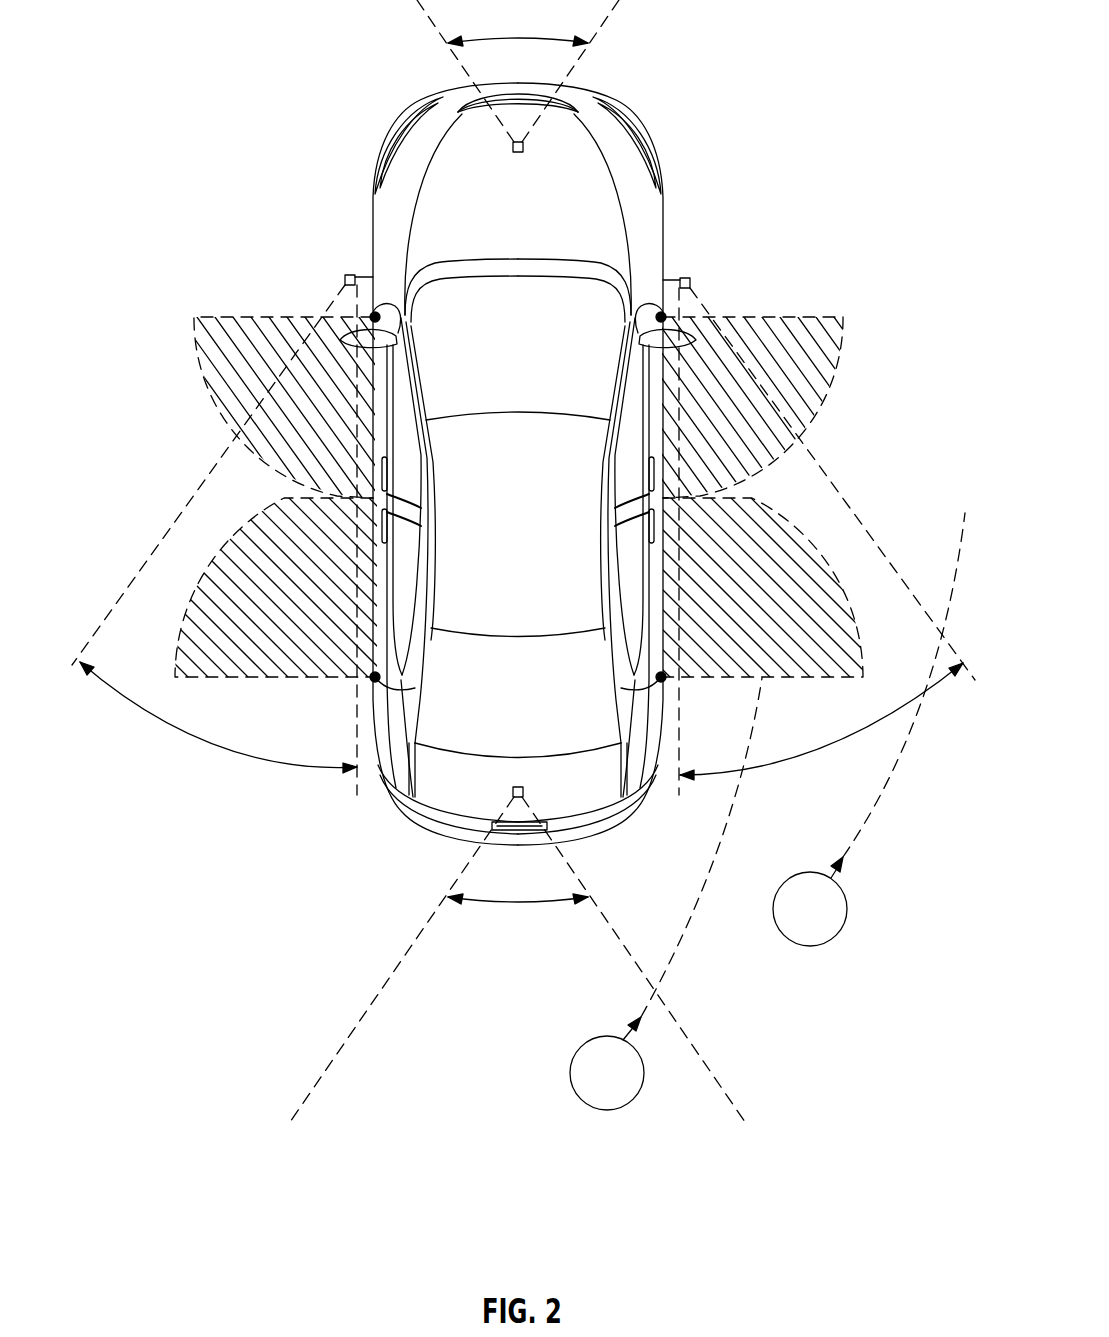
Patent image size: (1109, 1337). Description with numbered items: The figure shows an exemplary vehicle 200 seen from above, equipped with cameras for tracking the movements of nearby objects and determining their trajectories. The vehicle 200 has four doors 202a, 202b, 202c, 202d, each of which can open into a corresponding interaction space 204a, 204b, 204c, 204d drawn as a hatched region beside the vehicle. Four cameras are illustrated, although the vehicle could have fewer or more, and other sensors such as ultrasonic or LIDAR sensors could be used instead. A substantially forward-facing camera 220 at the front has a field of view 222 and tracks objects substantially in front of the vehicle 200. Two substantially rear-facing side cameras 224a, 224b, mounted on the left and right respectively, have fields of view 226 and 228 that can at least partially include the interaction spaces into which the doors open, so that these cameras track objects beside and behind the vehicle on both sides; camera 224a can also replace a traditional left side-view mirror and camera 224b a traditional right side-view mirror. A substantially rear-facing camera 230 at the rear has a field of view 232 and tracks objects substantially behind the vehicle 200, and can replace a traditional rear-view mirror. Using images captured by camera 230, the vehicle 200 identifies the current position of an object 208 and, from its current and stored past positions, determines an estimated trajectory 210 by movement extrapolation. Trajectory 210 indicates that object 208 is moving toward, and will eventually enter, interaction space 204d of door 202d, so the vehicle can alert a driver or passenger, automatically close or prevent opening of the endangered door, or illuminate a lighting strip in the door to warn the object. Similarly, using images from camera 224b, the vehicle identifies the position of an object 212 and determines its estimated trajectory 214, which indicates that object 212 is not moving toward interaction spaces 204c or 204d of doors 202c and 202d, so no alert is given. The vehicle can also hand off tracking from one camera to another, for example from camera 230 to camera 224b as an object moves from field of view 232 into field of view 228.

The vehicle 200 is at (622, 115).
The door 202a is at (382, 392).
The door 202b is at (382, 592).
The door 202c is at (655, 392).
The door 202d is at (655, 592).
The interaction space 204a is at (238, 332).
The interaction space 204b is at (295, 668).
The interaction space 204c is at (807, 332).
The interaction space 204d is at (789, 664).
The object 208 is at (572, 1078).
The estimated trajectory 210 is at (730, 822).
The object 212 is at (847, 913).
The estimated trajectory 214 is at (893, 760).
The camera 220 is at (512, 146).
The field of view 222 is at (493, 33).
The camera 224a is at (345, 280).
The camera 224b is at (690, 282).
The field of view 226 is at (178, 735).
The field of view 228 is at (784, 772).
The camera 230 is at (512, 792).
The field of view 232 is at (520, 905).